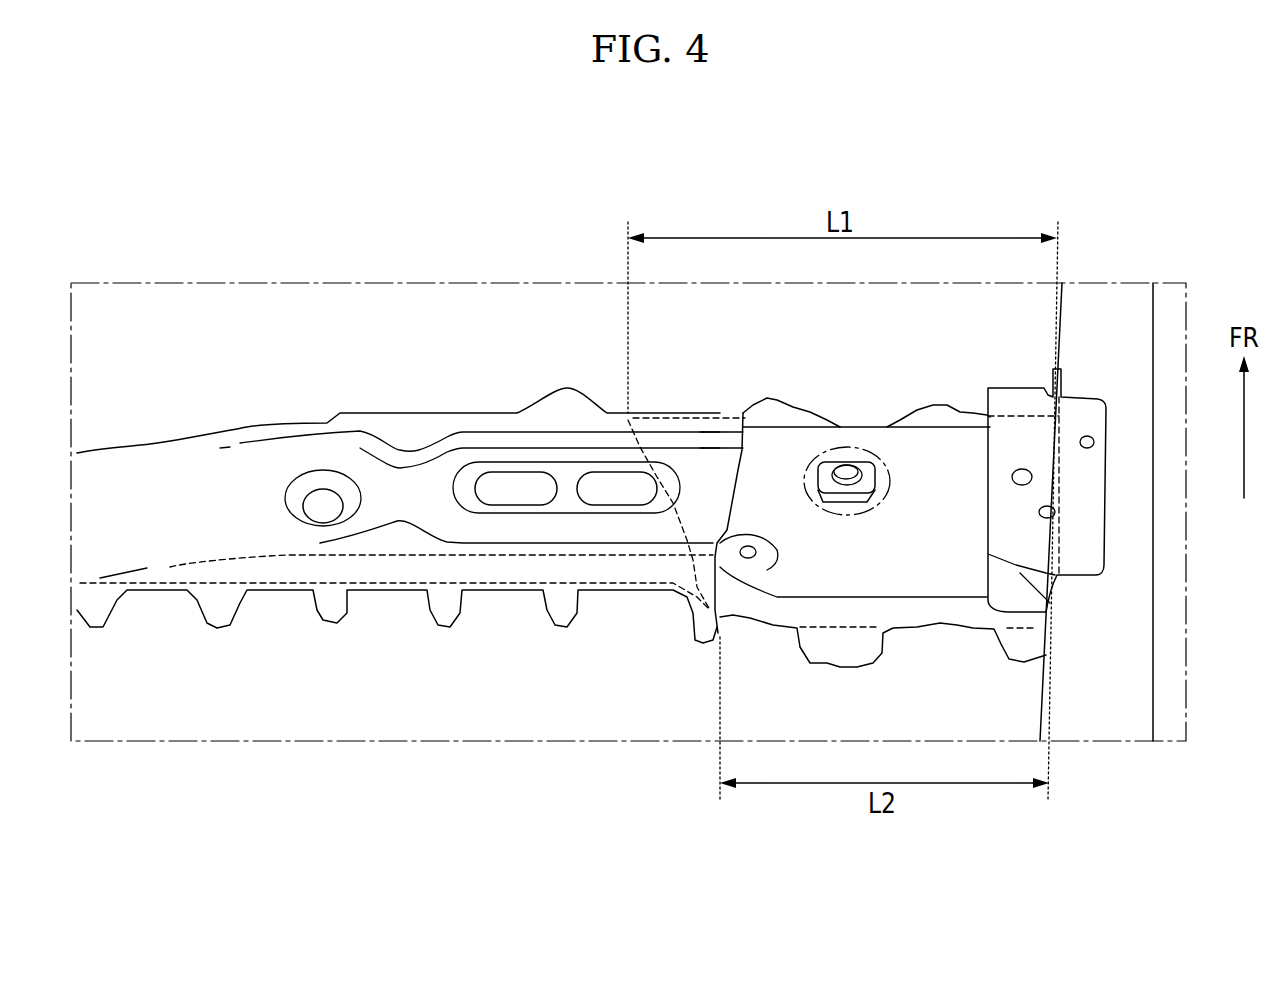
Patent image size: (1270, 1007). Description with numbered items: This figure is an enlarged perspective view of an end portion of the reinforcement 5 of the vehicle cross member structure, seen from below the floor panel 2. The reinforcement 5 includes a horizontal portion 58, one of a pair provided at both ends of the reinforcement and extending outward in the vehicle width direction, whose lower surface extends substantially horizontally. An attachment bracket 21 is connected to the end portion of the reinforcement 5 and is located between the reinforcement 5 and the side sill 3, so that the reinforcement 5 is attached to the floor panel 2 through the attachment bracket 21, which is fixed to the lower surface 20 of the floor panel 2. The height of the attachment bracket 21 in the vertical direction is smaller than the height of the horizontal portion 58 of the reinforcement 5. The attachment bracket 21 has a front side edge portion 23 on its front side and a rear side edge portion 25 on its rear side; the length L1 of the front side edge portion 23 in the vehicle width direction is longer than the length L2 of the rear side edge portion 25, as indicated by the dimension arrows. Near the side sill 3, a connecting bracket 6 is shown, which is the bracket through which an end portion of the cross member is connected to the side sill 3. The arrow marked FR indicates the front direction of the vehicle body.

The floor panel 2 is at (617, 657).
The side sill 3 is at (1128, 632).
The reinforcement 5 is at (407, 543).
The connecting bracket 6 is at (1087, 524).
The lower surface of the floor panel 20 is at (515, 678).
The attachment bracket 21 is at (922, 557).
The front side edge portion 23 is at (867, 423).
The rear side edge portion 25 is at (948, 610).
The horizontal portion 58 is at (400, 493).